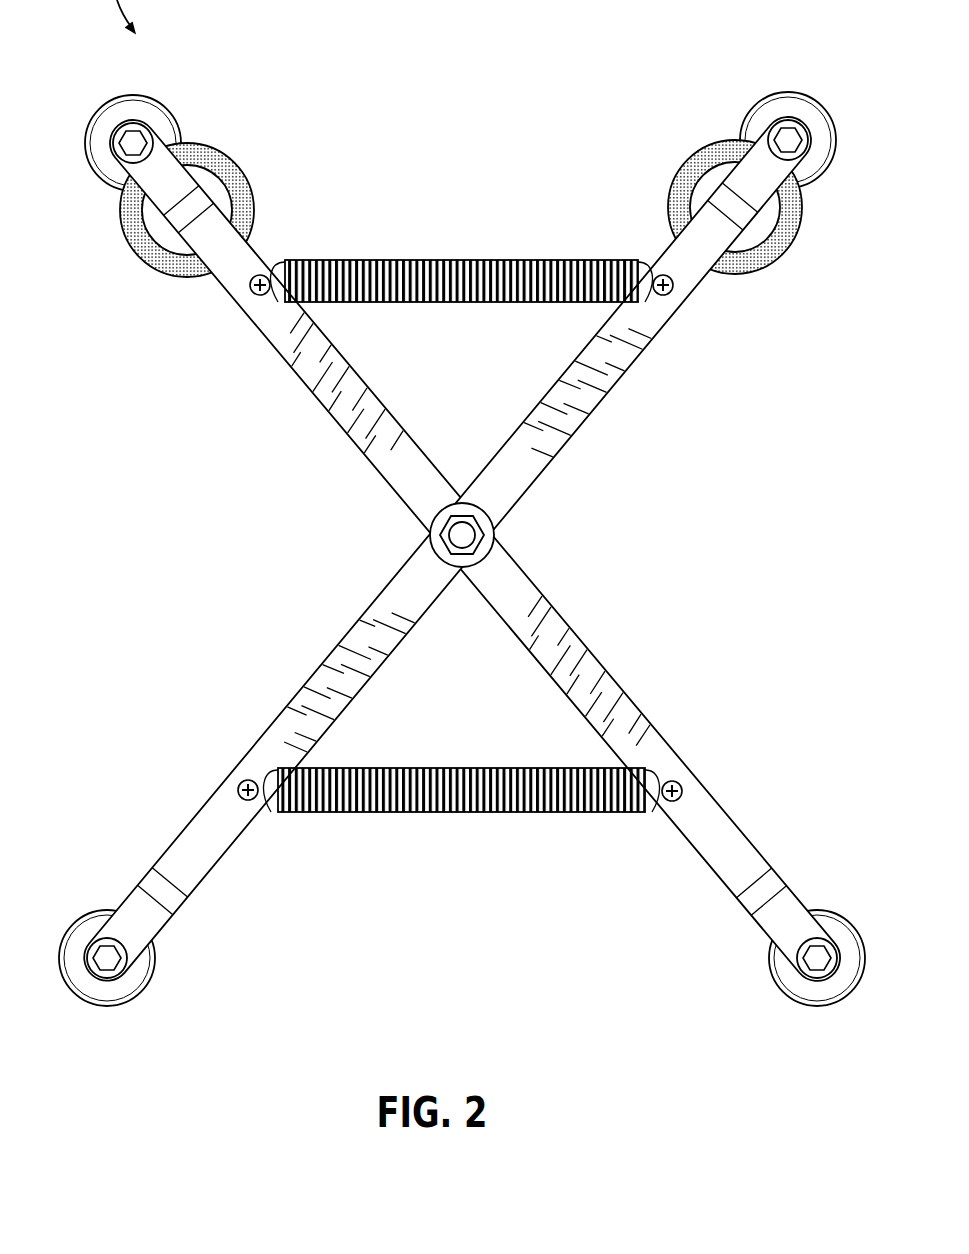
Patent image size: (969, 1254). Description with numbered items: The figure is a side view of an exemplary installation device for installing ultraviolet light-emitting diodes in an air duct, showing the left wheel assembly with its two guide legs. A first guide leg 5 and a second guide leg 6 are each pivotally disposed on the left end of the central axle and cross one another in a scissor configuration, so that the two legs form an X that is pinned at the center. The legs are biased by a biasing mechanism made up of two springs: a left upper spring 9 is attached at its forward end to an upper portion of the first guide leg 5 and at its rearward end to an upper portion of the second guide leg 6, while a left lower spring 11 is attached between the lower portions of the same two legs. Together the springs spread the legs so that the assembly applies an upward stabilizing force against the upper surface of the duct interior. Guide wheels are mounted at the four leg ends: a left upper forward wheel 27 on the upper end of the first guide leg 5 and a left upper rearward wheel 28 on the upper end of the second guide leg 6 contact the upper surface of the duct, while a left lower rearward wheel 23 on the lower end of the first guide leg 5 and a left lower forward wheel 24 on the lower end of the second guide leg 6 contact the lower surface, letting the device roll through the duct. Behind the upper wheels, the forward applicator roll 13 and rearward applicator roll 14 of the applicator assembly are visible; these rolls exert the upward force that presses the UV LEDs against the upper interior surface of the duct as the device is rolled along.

The first guide leg 5 is at (237, 300).
The second guide leg 6 is at (692, 298).
The left upper spring 9 is at (470, 260).
The left lower spring 11 is at (493, 812).
The forward applicator roll 13 is at (236, 157).
The rearward applicator roll 14 is at (678, 167).
The left lower rearward wheel 23 is at (815, 990).
The left lower forward wheel 24 is at (97, 993).
The left upper forward wheel 27 is at (170, 97).
The left upper rearward wheel 28 is at (810, 97).